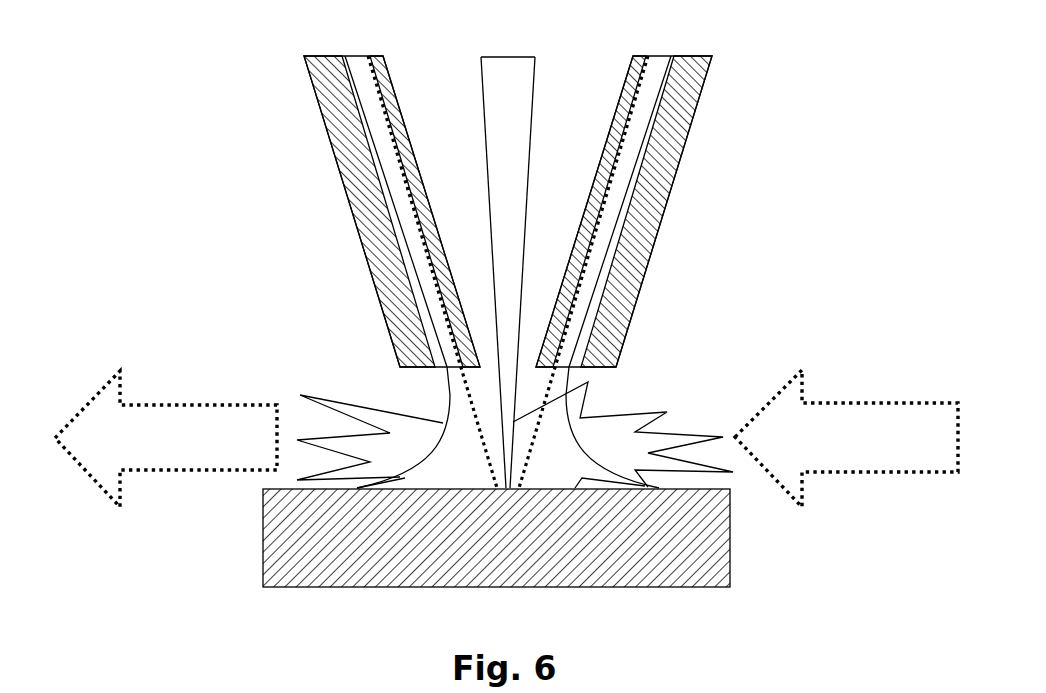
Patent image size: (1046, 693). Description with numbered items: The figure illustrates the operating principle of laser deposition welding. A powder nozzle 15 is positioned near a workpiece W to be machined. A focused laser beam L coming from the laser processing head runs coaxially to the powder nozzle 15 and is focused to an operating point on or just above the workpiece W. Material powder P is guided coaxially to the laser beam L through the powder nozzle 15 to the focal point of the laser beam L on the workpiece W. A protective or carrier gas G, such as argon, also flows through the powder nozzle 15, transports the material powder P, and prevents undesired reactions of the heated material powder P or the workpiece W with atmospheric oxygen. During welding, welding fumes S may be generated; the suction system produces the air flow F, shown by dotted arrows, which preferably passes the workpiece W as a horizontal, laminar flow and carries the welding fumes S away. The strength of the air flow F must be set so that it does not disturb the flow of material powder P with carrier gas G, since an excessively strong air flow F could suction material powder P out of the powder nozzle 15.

The powder nozzle 15 is at (342, 175).
The laser beam L is at (508, 227).
The protective or carrier gas G is at (432, 305).
The material powder P is at (565, 323).
The welding fumes S is at (667, 412).
The workpiece W is at (293, 529).
The air flow F is at (506, 438).